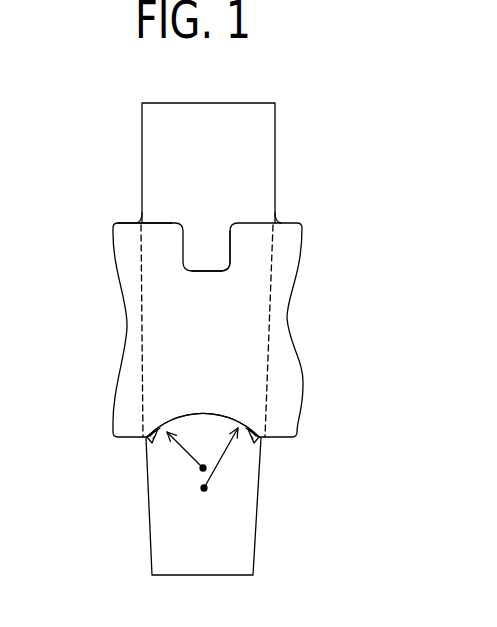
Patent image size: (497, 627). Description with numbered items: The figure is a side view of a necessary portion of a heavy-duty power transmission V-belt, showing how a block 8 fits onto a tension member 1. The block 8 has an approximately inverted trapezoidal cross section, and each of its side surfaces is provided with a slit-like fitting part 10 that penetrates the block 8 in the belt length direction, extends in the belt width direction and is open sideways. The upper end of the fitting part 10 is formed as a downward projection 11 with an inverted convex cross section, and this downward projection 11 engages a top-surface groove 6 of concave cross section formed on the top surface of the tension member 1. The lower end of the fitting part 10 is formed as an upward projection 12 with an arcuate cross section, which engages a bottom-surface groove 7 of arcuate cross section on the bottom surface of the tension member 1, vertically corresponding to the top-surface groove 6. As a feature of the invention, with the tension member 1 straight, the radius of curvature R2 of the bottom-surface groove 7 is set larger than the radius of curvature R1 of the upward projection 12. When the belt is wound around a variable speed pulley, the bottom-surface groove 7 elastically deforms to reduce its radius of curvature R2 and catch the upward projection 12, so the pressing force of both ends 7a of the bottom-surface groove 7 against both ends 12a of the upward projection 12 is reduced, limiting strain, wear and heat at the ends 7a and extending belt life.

The tension member 1 is at (299, 272).
The top-surface groove 6 is at (222, 270).
The bottom-surface groove 7 is at (207, 413).
The end of bottom-surface groove 7a is at (147, 436).
The block 8 is at (158, 103).
The fitting part 10 is at (160, 228).
The downward projection 11 is at (197, 271).
The upward projection 12 is at (183, 413).
The end of upward projection 12a is at (147, 441).
The radius of curvature of upward projection R1 is at (185, 452).
The radius of curvature of bottom-surface groove R2 is at (220, 447).